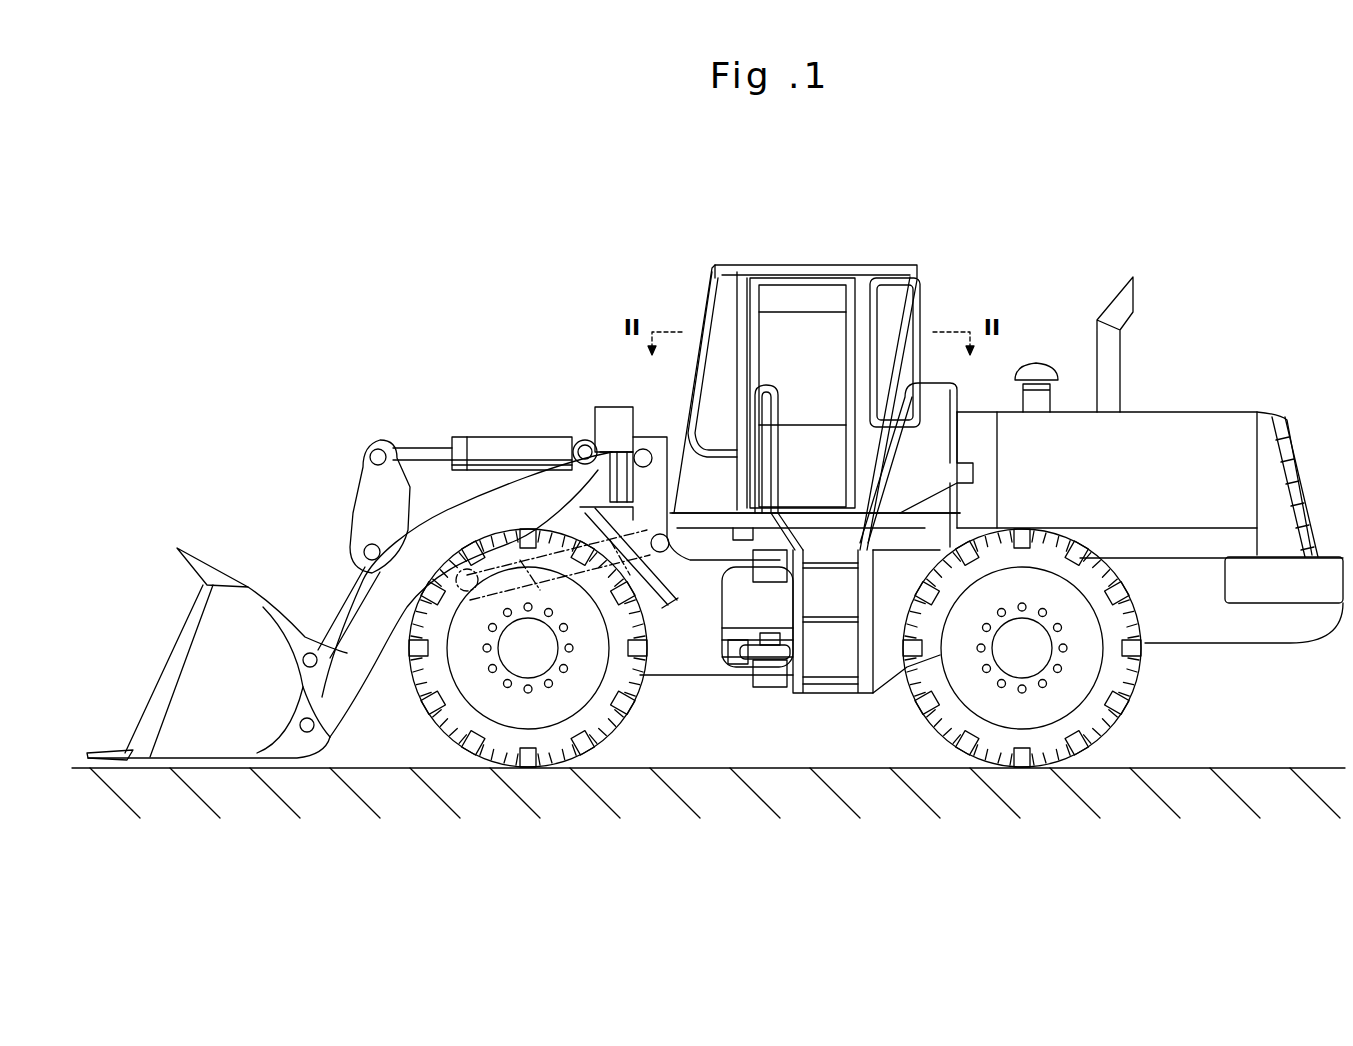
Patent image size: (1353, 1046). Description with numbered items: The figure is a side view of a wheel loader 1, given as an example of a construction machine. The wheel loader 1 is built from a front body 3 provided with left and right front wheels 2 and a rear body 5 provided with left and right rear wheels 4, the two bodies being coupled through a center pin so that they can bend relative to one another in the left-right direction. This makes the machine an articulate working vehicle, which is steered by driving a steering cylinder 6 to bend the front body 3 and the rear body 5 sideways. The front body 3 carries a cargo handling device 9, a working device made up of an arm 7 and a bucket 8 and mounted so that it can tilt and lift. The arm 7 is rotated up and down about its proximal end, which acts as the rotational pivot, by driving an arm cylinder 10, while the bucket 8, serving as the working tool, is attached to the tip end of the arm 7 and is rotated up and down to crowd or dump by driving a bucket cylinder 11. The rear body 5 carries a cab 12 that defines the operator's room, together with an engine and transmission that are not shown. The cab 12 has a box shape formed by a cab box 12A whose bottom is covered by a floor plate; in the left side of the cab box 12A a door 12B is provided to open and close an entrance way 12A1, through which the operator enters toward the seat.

The wheel loader 1 is at (587, 282).
The front wheels 2 is at (528, 705).
The front body 3 is at (705, 678).
The rear wheels 4 is at (1022, 705).
The rear body 5 is at (1196, 410).
The steering cylinder 6 is at (775, 650).
The arm 7 is at (483, 525).
The bucket 8 is at (236, 655).
The cargo handling device 9 is at (431, 514).
The arm cylinder 10 is at (587, 500).
The bucket cylinder 11 is at (535, 453).
The cab 12 is at (849, 267).
The cab box 12A is at (860, 318).
The entrance way 12A1 is at (750, 317).
The door 12B is at (795, 297).